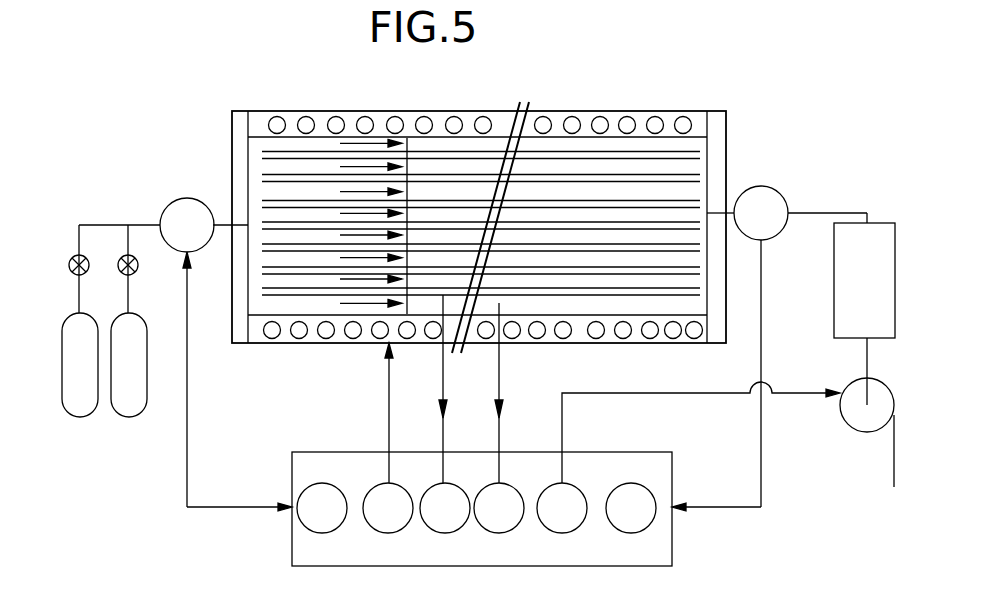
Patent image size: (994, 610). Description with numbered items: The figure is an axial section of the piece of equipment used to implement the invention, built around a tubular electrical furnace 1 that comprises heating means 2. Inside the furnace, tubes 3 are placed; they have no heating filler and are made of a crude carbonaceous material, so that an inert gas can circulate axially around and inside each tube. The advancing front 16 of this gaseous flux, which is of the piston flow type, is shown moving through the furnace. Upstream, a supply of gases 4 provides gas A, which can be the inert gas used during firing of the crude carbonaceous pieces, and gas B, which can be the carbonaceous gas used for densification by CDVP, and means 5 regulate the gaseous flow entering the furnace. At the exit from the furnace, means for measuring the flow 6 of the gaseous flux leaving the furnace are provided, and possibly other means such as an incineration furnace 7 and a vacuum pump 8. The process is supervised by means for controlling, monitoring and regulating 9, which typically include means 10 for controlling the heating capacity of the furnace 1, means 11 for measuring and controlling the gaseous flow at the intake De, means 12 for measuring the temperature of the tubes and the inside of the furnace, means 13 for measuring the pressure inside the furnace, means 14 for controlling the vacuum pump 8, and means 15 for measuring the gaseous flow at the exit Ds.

The tubular electrical furnace 1 is at (232, 123).
The heating means 2 is at (315, 118).
The tubes 3 is at (447, 150).
The supply of gases 4 is at (98, 225).
The means for regulating the gaseous flow 5 is at (183, 198).
The means for measuring the flow 6 is at (778, 186).
The incineration furnace 7 is at (834, 303).
The vacuum pump 8 is at (892, 393).
The means for controlling, monitoring and regulating 9 is at (292, 532).
The means for controlling the heating capacity 10 is at (389, 430).
The means for measuring and controlling the gaseous flow at the intake 11 is at (217, 507).
The means for measuring the temperature 12 is at (443, 437).
The means for measuring the pressure 13 is at (499, 442).
The means for controlling the vacuum pump 14 is at (630, 380).
The means for measuring the gaseous flow at the exit 15 is at (758, 507).
The advancing front 16 is at (420, 167).